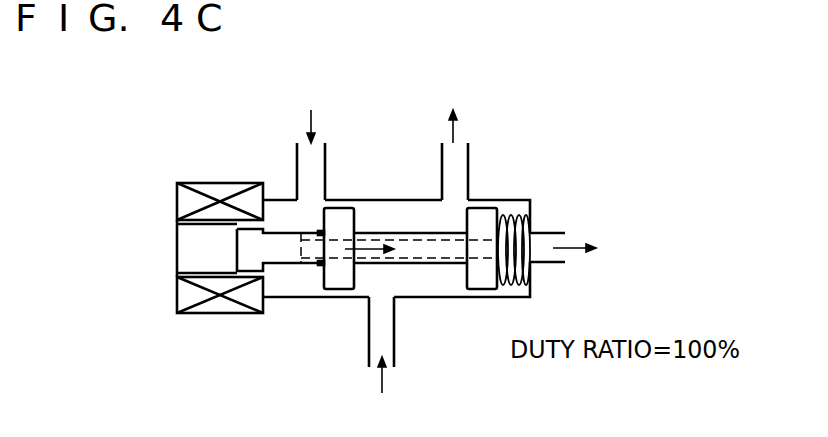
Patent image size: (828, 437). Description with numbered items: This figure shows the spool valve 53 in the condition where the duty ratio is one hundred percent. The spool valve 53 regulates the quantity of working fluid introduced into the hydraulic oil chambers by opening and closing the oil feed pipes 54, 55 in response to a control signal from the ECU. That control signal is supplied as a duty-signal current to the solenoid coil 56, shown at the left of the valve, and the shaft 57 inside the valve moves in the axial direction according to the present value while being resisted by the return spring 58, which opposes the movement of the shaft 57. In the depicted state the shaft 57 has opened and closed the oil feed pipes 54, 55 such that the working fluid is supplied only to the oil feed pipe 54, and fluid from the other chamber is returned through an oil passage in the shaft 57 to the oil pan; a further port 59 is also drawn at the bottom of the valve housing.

The spool valve 53 is at (250, 249).
The oil feed pipe 54 is at (457, 161).
The oil feed pipe 55 is at (316, 160).
The solenoid coil 56 is at (223, 183).
The shaft 57 is at (391, 232).
The return spring 58 is at (531, 213).
The inlet port 59 is at (443, 255).